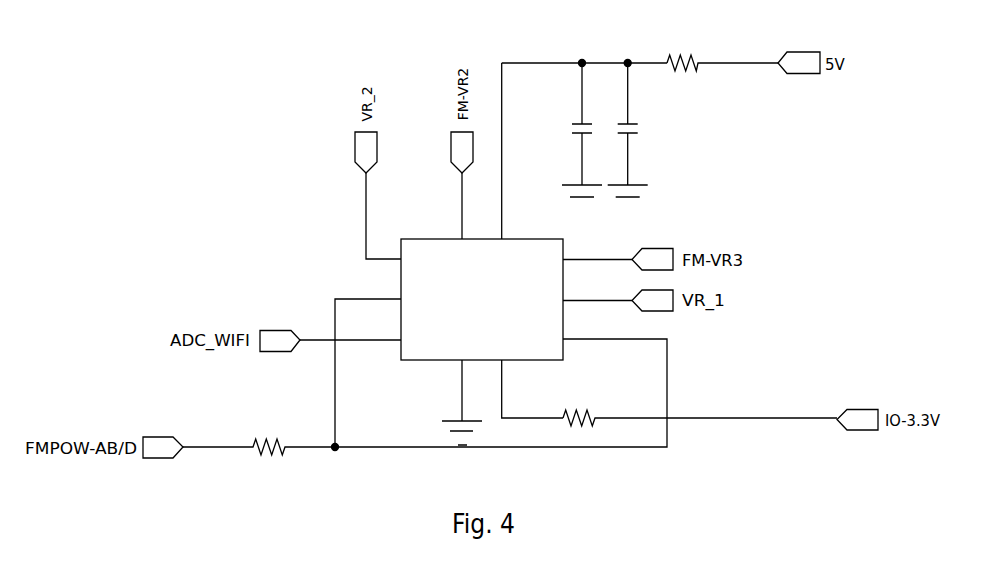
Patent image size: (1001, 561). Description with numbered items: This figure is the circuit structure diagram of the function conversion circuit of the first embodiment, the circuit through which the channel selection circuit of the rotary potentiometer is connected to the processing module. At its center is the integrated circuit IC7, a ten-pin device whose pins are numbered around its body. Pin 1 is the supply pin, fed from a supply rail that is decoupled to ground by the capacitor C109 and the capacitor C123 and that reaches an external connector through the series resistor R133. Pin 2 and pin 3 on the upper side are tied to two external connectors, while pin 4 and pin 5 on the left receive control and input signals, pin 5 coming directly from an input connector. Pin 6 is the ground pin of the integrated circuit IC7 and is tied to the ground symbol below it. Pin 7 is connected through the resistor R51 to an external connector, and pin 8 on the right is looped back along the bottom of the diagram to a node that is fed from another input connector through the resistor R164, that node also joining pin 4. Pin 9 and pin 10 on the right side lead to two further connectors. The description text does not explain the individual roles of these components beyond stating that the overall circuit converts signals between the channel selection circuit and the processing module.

The analog switch IC WAS4729QB IC7 is at (452, 324).
The pin 1 V+ 1 is at (491, 151).
The pin 2 NO1 2 is at (451, 206).
The pin 3 COM1 3 is at (383, 216).
The pin 4 IN1 4 is at (368, 365).
The pin 5 NC1 5 is at (350, 332).
The pin 6 GND 6 is at (461, 402).
The pin 7 NC2 7 is at (522, 389).
The pin 8 IN2 8 is at (501, 385).
The pin 9 COM2 9 is at (597, 293).
The pin 10 NO2 10 is at (597, 252).
The resistor 220R R133 is at (720, 62).
The resistor 510R R164 is at (259, 448).
The resistor 510R R51 is at (697, 419).
The capacitor 104 C109 is at (576, 130).
The capacitor 475 C123 is at (622, 130).